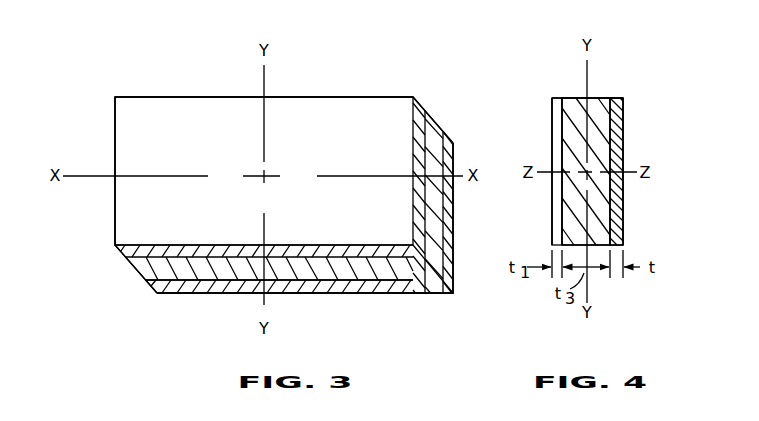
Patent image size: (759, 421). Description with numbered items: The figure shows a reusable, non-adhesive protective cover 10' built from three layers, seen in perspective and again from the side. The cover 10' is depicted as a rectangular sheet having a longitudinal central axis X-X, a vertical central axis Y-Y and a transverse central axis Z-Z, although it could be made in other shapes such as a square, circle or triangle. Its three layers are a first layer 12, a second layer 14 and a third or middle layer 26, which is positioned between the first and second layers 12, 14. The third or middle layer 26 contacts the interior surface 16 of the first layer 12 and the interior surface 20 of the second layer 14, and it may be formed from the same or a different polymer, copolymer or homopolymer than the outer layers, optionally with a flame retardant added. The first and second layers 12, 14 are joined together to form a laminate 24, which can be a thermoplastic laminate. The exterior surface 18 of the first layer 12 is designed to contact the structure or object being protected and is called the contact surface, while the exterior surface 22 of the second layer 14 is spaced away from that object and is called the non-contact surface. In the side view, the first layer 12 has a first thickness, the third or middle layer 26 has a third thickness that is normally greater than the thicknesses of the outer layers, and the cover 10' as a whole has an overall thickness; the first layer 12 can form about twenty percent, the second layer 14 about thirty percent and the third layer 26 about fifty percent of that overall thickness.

In FIG. 3, the reusable, non-adhesive protective cover 10' is at (294, 159).
In FIG. 4, the reusable, non-adhesive protective cover 10' is at (632, 130).
In FIG. 3, the first layer 12 is at (401, 296).
In FIG. 4, the first layer 12 is at (617, 202).
In FIG. 3, the second layer 14 is at (118, 250).
In FIG. 4, the second layer 14 is at (549, 200).
In FIG. 3, the interior surface of the first layer 16 is at (371, 287).
In FIG. 4, the interior surface of the first layer 16 is at (606, 160).
In FIG. 3, the exterior surface of the first layer 18 is at (433, 294).
In FIG. 4, the exterior surface of the first layer 18 is at (623, 225).
In FIG. 3, the interior surface of the second layer 20 is at (128, 260).
In FIG. 4, the interior surface of the second layer 20 is at (566, 101).
In FIG. 3, the exterior surface of the second layer 22 is at (325, 147).
In FIG. 4, the exterior surface of the second layer 22 is at (552, 229).
In FIG. 3, the laminate 24 is at (199, 95).
In FIG. 4, the laminate 24 is at (603, 95).
In FIG. 3, the third or middle layer 26 is at (204, 268).
In FIG. 4, the third or middle layer 26 is at (604, 115).